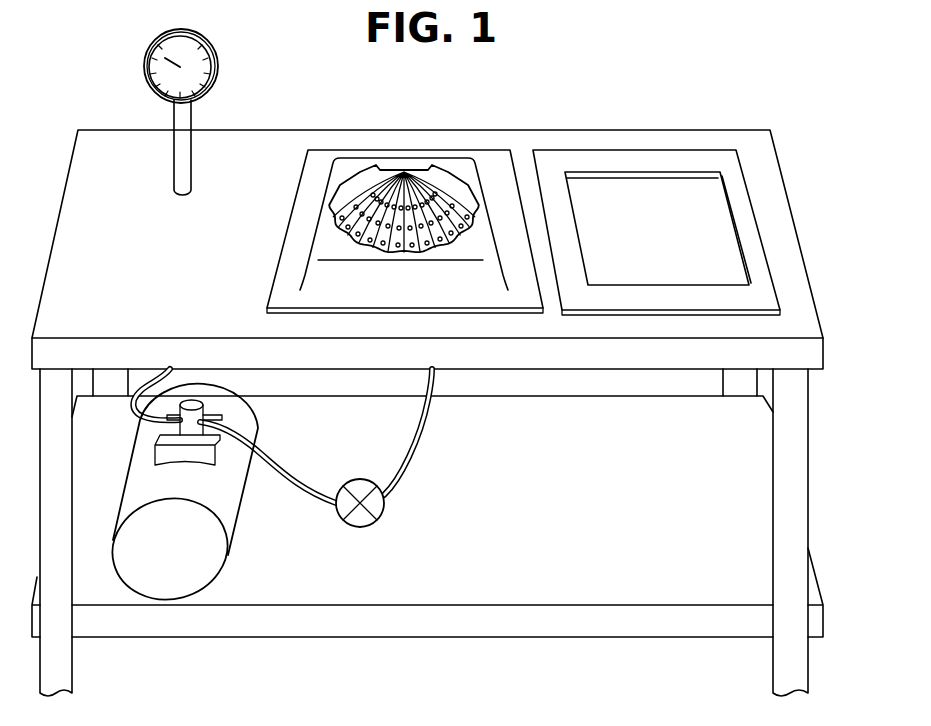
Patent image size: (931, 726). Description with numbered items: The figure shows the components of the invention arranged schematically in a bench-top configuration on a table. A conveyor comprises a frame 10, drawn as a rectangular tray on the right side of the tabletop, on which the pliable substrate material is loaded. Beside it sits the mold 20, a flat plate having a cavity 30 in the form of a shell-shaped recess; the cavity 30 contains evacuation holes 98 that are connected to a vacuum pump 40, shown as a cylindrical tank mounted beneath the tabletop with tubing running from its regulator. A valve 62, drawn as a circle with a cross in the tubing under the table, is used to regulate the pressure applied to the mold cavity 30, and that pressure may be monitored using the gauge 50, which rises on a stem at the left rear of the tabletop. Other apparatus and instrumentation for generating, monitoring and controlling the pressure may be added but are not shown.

The frame 10 is at (632, 160).
The mold 20 is at (288, 239).
The cavity 30 is at (368, 185).
The vacuum pump 40 is at (232, 508).
The gauge 50 is at (212, 42).
The valve 62 is at (387, 507).
The evacuation holes 98 is at (455, 195).